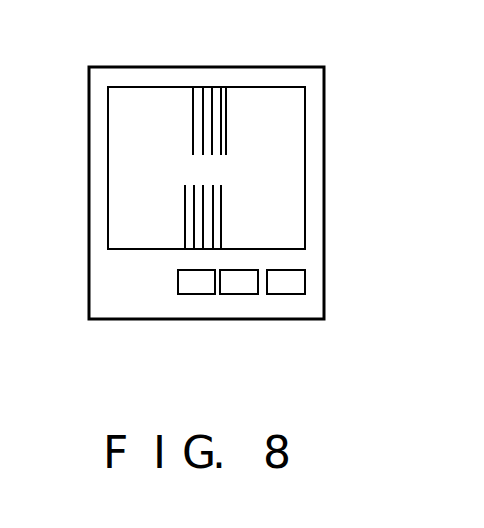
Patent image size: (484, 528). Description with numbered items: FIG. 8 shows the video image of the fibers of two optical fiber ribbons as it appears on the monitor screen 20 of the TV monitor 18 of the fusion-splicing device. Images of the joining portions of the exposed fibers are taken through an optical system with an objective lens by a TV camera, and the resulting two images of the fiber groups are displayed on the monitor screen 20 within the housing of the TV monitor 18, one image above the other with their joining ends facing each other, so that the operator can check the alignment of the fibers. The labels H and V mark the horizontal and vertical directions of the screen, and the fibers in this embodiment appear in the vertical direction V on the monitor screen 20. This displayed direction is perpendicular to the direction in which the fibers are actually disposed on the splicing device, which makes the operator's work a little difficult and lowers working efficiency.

The TV monitor 18 is at (332, 111).
The monitor screen 20 is at (297, 204).
The horizontal direction H is at (150, 86).
The vertical direction V is at (107, 160).